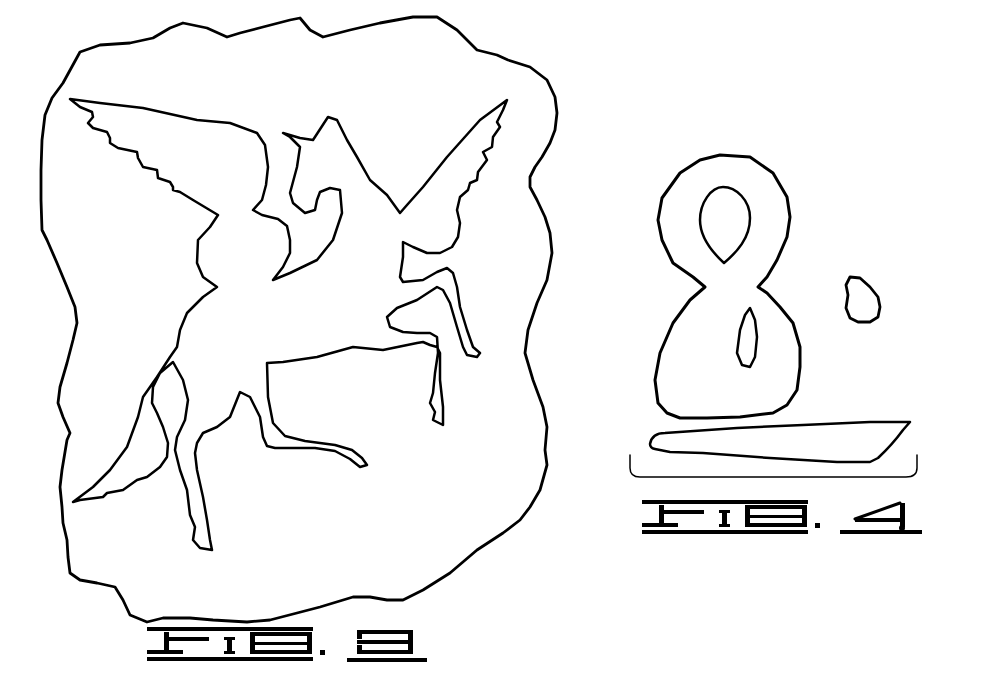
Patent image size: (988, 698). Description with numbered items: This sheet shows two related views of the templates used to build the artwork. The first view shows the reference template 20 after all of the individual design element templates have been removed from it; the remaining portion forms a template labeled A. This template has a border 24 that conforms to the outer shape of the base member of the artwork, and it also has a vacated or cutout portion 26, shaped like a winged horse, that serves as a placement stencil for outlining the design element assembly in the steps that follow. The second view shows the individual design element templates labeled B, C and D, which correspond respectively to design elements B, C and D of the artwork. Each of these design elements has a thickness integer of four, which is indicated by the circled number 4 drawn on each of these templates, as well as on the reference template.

In FIG. 3, the reference template 20 is at (324, 315).
In FIG. 3, the border 24 is at (538, 167).
In FIG. 3, the cutout portion 26 is at (356, 170).
In FIG. 3, the thickness integer 4 is at (326, 315).
In FIG. 4, the thickness integer 4 is at (755, 308).